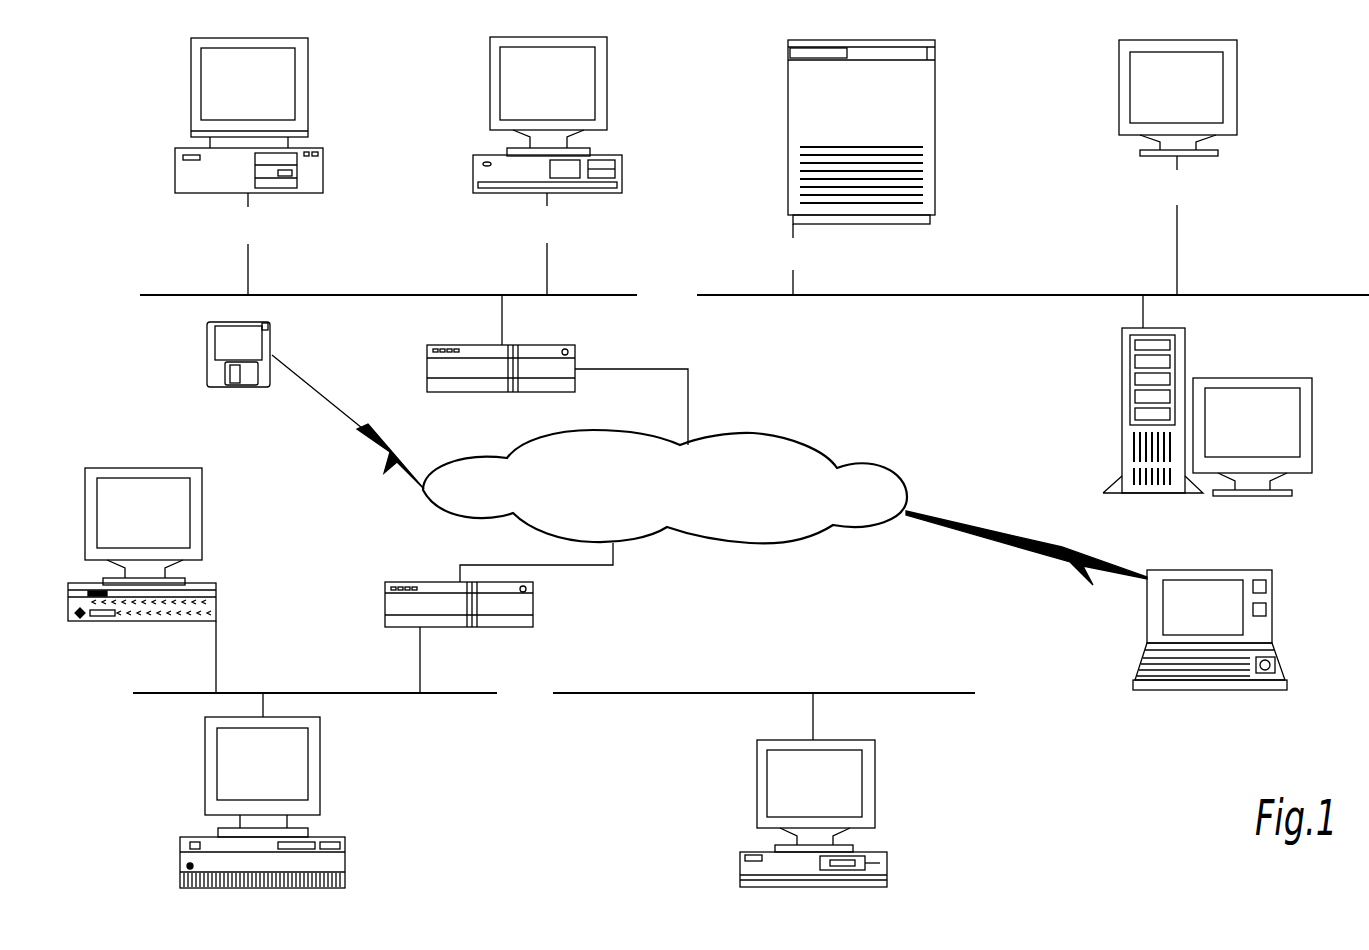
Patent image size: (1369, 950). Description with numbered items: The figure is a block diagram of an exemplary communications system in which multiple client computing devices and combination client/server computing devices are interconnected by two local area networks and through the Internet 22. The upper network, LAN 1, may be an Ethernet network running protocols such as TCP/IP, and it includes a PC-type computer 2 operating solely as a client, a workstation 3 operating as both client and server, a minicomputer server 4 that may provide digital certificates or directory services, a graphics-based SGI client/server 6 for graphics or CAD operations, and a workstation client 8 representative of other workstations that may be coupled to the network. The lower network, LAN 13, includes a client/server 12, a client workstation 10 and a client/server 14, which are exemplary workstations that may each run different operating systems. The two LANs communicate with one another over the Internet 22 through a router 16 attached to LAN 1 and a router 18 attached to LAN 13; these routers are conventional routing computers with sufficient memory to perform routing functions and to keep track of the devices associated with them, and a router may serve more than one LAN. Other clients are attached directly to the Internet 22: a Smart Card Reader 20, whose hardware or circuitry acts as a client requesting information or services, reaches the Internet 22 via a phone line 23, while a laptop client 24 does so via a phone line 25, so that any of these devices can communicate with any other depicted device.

The LAN 1 is at (689, 283).
The PC-type computer 2 is at (308, 93).
The workstation 3 is at (607, 93).
The minicomputer server 4 is at (935, 96).
The SGI client/server 6 is at (1237, 63).
The workstation client 8 is at (1185, 361).
The client workstation 10 is at (320, 746).
The client/server 12 is at (202, 536).
The LAN 13 is at (534, 706).
The client/server 14 is at (875, 748).
The router 16 is at (575, 362).
The router 18 is at (533, 619).
The Smart Card Reader 20 is at (270, 345).
The Internet 22 is at (700, 514).
The phone line 23 is at (328, 409).
The laptop client 24 is at (1272, 604).
The phone line 25 is at (1010, 549).